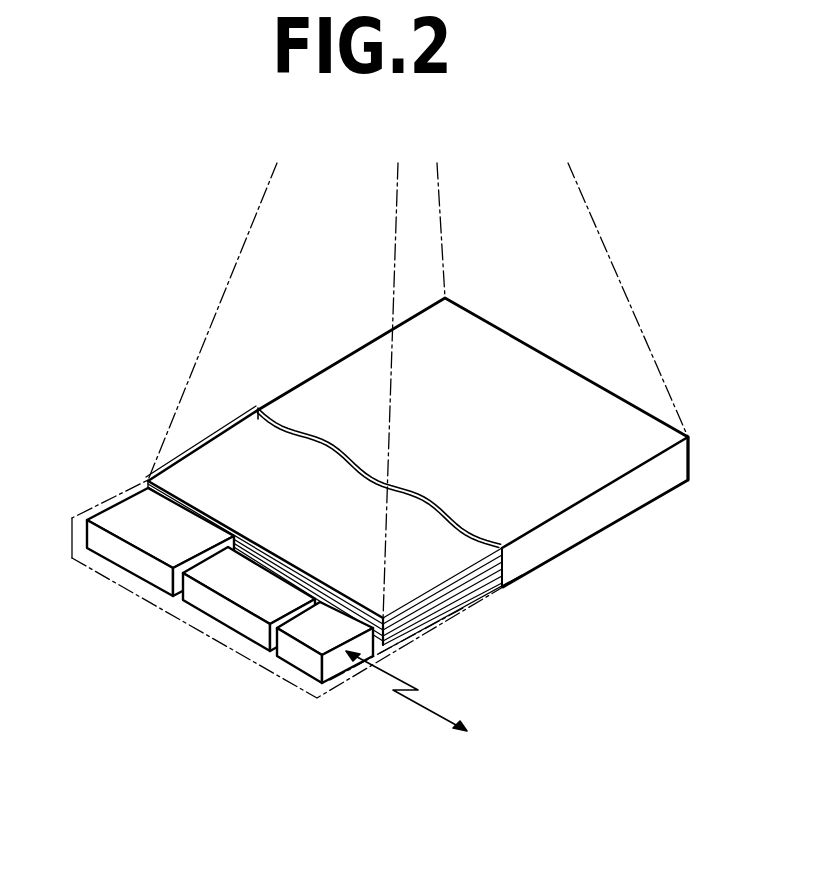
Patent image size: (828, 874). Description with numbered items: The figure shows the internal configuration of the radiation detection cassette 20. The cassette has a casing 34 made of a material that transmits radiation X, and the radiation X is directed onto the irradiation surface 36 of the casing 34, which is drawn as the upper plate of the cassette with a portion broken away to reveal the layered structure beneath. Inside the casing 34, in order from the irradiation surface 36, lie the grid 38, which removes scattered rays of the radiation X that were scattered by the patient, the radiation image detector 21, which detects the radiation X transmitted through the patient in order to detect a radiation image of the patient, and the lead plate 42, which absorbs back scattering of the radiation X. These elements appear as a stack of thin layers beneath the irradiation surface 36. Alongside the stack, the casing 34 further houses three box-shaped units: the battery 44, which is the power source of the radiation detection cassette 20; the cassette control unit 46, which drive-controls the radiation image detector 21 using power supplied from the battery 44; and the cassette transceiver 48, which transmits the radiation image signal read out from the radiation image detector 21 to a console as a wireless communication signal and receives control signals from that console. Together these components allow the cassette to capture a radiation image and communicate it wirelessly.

The radiation X is at (208, 337).
The radiation detection cassette 20 is at (417, 476).
The radiation image detector 21 is at (417, 617).
The casing 34 is at (568, 528).
The irradiation surface 36 is at (553, 383).
The grid 38 is at (433, 598).
The lead plate 42 is at (413, 633).
The battery 44 is at (127, 557).
The cassette control unit 46 is at (227, 617).
The cassette transceiver 48 is at (288, 658).